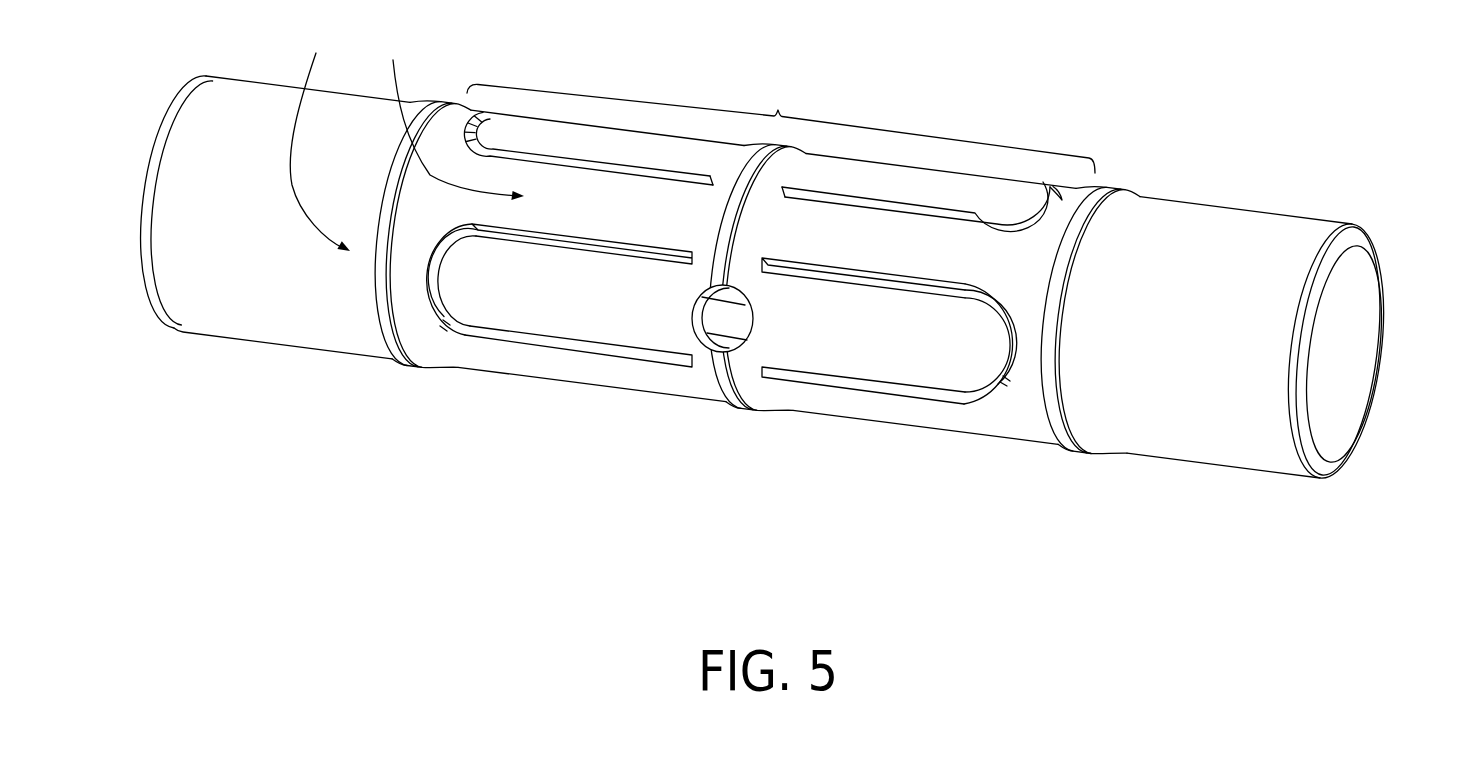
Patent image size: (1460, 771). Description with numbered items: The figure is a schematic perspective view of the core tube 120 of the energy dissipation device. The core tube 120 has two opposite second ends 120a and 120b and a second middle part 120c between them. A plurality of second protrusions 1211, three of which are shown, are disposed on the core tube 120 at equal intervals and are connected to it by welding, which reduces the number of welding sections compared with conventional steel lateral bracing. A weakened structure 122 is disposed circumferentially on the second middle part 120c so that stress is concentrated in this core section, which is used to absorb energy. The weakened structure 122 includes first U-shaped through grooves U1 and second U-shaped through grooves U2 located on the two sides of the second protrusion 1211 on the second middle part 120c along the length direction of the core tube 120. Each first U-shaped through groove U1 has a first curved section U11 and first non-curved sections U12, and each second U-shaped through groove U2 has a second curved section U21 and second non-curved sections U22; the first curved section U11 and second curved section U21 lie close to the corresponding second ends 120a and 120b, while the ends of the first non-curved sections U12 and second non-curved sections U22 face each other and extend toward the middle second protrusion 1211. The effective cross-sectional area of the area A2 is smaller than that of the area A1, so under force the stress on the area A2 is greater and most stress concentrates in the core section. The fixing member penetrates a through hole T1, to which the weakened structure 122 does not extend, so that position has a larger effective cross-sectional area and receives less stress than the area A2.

The core tube 120 is at (1233, 212).
The second end 120a is at (1394, 291).
The second end 120b is at (148, 163).
The second middle part 120c is at (781, 124).
The second protrusions 1211 is at (394, 364).
The weakened structure 122 is at (794, 316).
The first U-shaped through groove U1 is at (954, 347).
The first curved section U11 is at (1013, 346).
The first non-curved sections U12 is at (975, 517).
The second U-shaped through groove U2 is at (570, 278).
The second curved section U21 is at (430, 305).
The second non-curved sections U22 is at (537, 346).
The through hole T1 is at (747, 312).
The area A1 is at (320, 137).
The area A2 is at (452, 115).